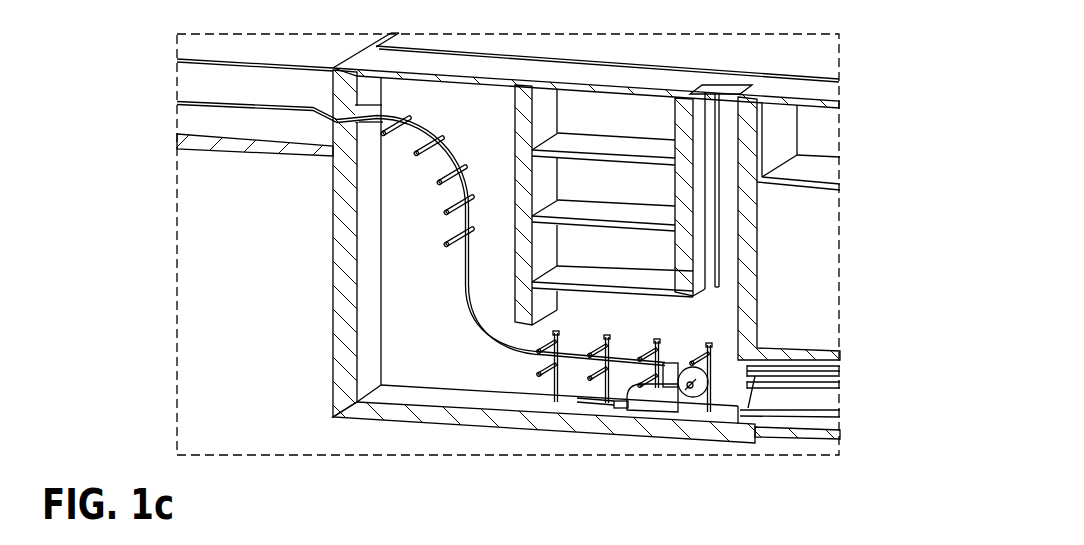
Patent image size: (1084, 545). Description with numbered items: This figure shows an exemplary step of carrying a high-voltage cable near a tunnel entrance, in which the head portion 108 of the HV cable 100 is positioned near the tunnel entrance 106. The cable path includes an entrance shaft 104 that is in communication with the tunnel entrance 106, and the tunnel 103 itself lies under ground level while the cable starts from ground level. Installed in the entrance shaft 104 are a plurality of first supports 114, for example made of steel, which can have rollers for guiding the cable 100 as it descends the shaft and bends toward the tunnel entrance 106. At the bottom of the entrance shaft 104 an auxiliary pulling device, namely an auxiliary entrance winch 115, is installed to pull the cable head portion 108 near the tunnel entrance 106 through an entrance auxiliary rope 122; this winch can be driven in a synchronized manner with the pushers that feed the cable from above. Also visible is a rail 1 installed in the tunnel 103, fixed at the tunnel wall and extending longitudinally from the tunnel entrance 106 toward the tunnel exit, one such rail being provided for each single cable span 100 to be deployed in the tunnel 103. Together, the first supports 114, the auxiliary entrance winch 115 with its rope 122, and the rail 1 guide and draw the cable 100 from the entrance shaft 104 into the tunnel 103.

The rail 1 is at (838, 370).
The HV cable 100 is at (470, 303).
The tunnel 103 is at (815, 400).
The entrance shaft 104 is at (402, 287).
The tunnel entrance 106 is at (745, 392).
The head portion 108 is at (622, 358).
The first supports 114 is at (427, 156).
The auxiliary entrance winch 115 is at (697, 388).
The entrance auxiliary rope 122 is at (673, 363).